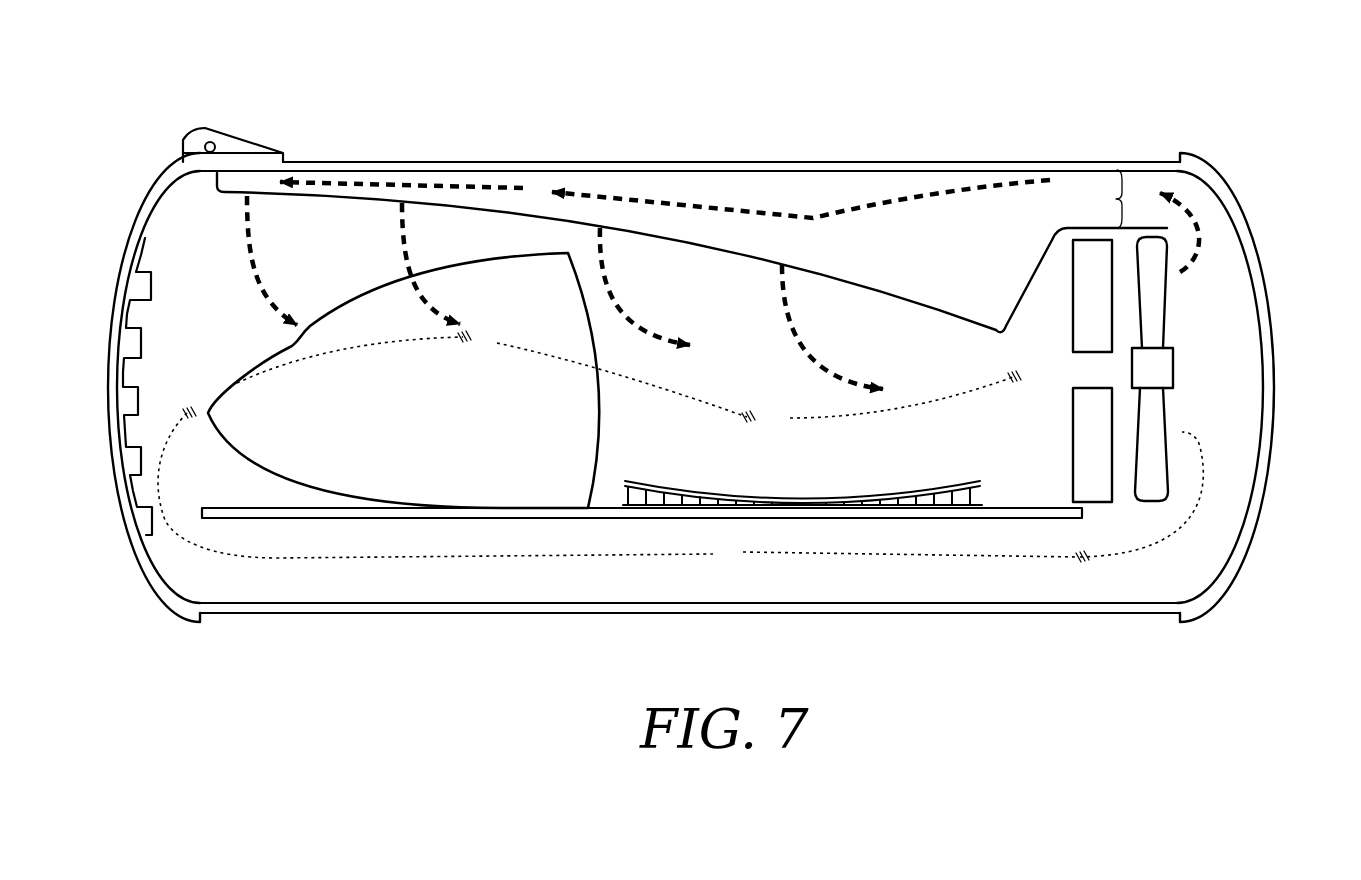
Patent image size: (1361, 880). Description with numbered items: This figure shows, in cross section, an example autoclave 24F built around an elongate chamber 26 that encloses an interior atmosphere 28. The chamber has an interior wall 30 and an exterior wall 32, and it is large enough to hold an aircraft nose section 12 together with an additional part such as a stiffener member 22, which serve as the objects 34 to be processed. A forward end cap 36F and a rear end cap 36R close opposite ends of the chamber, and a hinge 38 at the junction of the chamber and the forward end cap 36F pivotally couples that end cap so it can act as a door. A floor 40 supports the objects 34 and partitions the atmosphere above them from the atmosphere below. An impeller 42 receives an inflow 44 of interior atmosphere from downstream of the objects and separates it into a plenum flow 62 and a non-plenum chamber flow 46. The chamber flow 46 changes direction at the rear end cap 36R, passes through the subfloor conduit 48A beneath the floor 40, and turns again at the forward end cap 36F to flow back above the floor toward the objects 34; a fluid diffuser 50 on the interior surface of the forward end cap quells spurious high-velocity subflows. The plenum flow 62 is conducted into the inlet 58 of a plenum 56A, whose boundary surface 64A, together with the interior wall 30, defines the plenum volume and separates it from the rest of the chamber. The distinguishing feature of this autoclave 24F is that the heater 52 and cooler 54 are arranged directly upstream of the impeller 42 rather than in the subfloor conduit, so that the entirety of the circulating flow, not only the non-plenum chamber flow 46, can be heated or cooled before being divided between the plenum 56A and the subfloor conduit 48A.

The nose section 12 is at (422, 388).
The stiffener member 22 is at (884, 494).
The autoclave 24F is at (432, 78).
The elongate chamber 26 is at (780, 155).
The interior atmosphere 28 is at (218, 318).
The interior wall 30 is at (1063, 600).
The exterior wall 32 is at (803, 160).
The objects 34 is at (732, 385).
The forward end cap 36F is at (107, 386).
The rear end cap 36R is at (1278, 383).
The hinge 38 is at (245, 128).
The floor 40 is at (295, 507).
The impeller 42 is at (1169, 377).
The inflow 44 is at (1029, 412).
The chamber flow 46 is at (1252, 457).
The subfloor conduit 48A is at (644, 585).
The fluid diffuser 50 is at (148, 537).
The heater 52 is at (1111, 304).
The cooler 54 is at (1111, 457).
The plenum 56A is at (958, 270).
The inlet 58 is at (1107, 199).
The plenum flow 62 is at (831, 212).
The boundary surface 64A is at (955, 322).